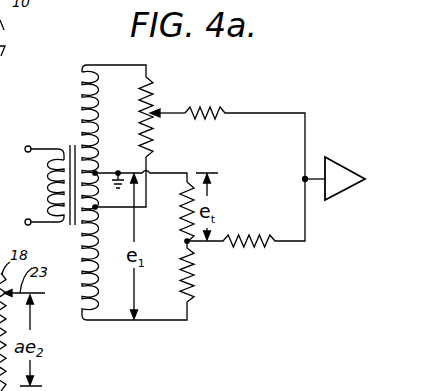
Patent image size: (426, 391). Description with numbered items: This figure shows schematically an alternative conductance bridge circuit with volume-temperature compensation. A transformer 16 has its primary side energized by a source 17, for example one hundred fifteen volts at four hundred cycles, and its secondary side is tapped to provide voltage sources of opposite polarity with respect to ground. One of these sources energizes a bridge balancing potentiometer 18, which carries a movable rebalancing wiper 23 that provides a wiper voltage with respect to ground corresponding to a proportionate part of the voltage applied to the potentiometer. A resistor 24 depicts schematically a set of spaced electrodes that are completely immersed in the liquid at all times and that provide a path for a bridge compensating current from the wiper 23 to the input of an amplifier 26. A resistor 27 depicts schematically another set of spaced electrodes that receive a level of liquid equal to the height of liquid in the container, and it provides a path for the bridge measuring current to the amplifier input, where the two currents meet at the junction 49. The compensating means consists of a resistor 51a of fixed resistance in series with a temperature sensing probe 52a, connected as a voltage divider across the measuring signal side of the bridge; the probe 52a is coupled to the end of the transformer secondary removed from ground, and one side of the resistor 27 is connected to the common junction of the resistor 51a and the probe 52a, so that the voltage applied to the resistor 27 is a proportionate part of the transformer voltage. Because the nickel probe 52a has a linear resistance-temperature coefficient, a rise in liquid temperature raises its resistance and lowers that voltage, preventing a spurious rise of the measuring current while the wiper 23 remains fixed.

The transformer 16 is at (65, 226).
The source 17 is at (28, 200).
The bridge balancing potentiometer 18 is at (154, 93).
The rebalancing wiper 23 is at (178, 114).
The resistor 24 is at (211, 117).
The amplifier 26 is at (333, 157).
The resistor 27 is at (256, 246).
The summing junction 49 is at (311, 182).
The resistor 51a is at (183, 202).
The temperature sensing probe 52a is at (182, 283).